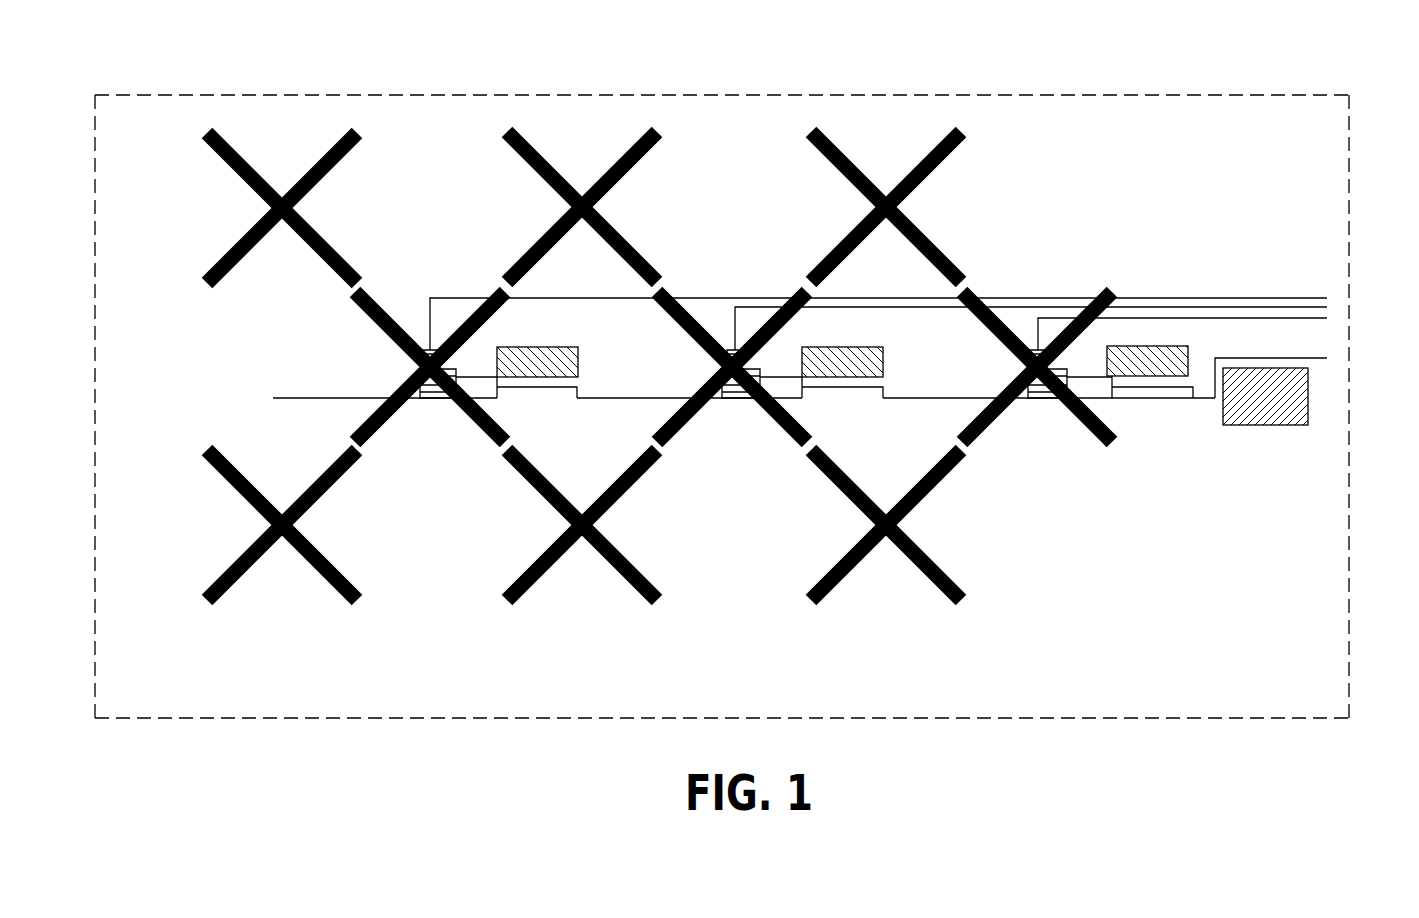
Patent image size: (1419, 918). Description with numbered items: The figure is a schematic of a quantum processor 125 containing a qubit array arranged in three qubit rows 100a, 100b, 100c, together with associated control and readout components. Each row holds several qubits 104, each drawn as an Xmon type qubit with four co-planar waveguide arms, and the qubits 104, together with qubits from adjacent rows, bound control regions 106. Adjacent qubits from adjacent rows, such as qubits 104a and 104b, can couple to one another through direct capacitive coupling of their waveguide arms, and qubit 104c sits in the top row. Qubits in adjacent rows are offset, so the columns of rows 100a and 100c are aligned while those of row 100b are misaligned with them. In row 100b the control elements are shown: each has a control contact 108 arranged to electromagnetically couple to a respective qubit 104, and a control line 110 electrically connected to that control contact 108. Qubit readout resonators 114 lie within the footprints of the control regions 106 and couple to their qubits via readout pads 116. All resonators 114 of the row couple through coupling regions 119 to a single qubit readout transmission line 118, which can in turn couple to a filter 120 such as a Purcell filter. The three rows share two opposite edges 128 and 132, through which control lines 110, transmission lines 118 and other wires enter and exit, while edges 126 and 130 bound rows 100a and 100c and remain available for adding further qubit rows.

The qubit row 100a is at (172, 199).
The qubit row 100b is at (186, 364).
The qubit row 100c is at (194, 517).
The qubit 104 is at (350, 136).
The qubit 104a is at (653, 136).
The qubit 104b is at (789, 438).
The qubit 104c is at (819, 134).
The control region 106 is at (1168, 243).
The control contact 108 is at (427, 350).
The control line 110 is at (553, 298).
The qubit readout resonator 114 is at (510, 347).
The readout pad 116 is at (428, 398).
The qubit readout transmission line 118 is at (648, 398).
The coupling region 119 is at (517, 387).
The filter 120 is at (1272, 425).
The quantum processor 125 is at (721, 398).
The edge 126 is at (868, 95).
The edge 128 is at (1349, 215).
The edge 130 is at (970, 718).
The edge 132 is at (95, 622).